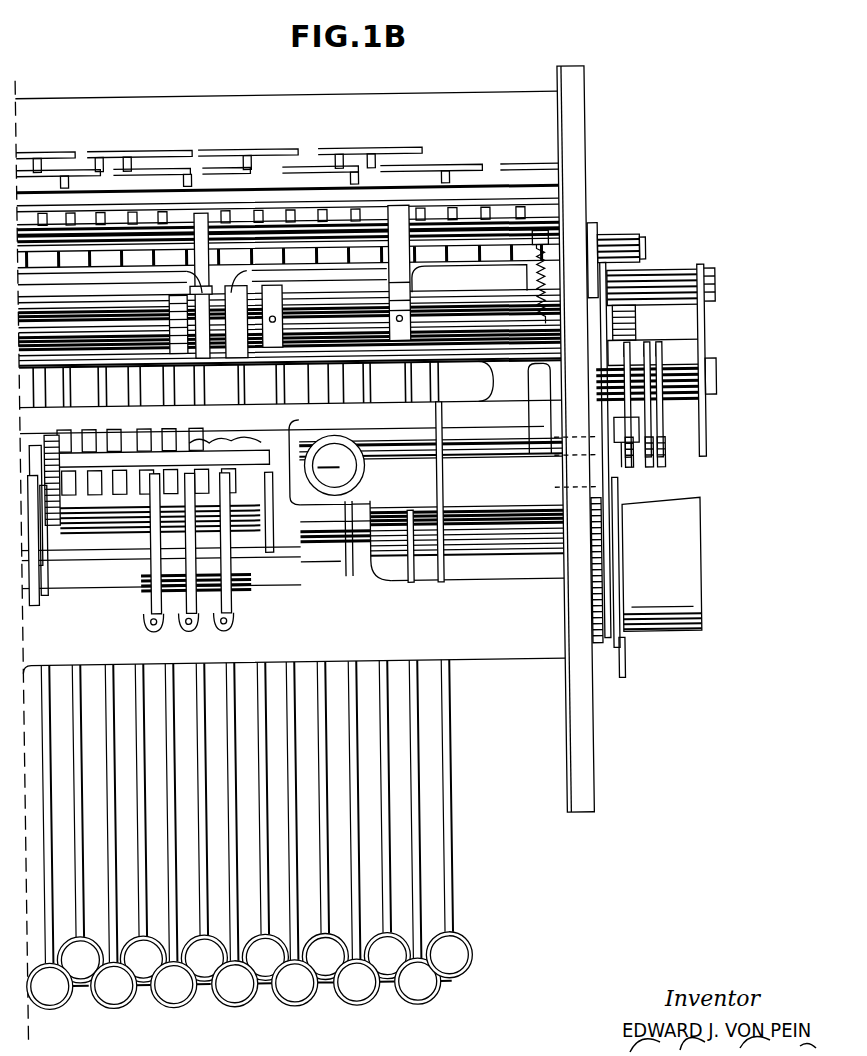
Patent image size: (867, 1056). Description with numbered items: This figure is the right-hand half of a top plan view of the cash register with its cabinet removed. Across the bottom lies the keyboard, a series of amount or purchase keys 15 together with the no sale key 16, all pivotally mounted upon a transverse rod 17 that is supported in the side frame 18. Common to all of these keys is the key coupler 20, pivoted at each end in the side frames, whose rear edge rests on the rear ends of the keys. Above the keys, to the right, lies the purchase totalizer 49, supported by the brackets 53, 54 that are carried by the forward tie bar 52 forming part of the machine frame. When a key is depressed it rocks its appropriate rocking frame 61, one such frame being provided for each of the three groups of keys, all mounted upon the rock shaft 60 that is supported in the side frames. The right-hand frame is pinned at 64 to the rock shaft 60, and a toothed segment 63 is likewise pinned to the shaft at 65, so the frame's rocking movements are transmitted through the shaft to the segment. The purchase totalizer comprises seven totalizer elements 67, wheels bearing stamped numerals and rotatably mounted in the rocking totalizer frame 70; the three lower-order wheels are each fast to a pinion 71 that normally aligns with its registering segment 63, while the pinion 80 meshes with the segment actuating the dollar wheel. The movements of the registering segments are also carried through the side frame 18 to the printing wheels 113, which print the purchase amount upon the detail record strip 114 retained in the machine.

The amount or purchase keys 15 is at (343, 997).
The no sale key 16 is at (455, 932).
The transverse rod 17 is at (493, 553).
The side frame 18 is at (578, 772).
The key coupler 20 is at (492, 398).
The purchase totalizer 49 is at (165, 517).
The forward tie bar 52 is at (460, 648).
The bracket 53 is at (40, 578).
The bracket 54 is at (348, 567).
The rock shaft 60 is at (470, 305).
The rocking frame 61 is at (92, 266).
The toothed segment 63 is at (232, 290).
The pin 64 is at (400, 317).
The pin 65 is at (279, 316).
The totalizer elements 67 is at (165, 500).
The rocking totalizer frame 70 is at (272, 548).
The pinion 71 is at (200, 458).
The pinion 80 is at (183, 336).
The printing wheels 113 is at (660, 481).
The detail record strip 114 is at (688, 533).